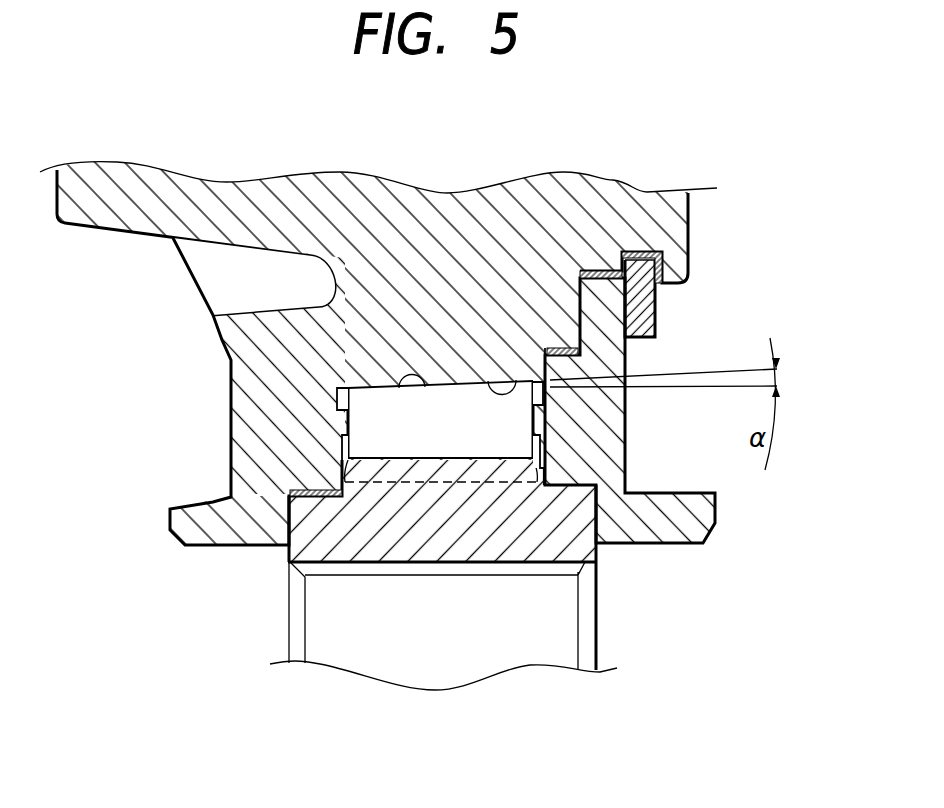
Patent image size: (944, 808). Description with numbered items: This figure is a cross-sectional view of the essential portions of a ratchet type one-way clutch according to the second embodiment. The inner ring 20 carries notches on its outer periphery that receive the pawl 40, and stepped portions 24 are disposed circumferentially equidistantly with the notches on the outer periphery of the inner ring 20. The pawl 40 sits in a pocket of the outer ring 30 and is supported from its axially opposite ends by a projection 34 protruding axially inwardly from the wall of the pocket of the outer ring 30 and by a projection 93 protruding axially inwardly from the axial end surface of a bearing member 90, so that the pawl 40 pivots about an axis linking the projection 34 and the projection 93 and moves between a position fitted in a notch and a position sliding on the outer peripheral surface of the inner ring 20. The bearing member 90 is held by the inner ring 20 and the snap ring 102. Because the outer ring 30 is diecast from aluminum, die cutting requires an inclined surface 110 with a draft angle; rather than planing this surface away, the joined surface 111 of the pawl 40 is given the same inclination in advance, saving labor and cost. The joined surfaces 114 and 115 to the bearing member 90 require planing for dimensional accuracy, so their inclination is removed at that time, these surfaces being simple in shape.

The inner ring 20 is at (572, 550).
The stepped portions 24 is at (450, 470).
The outer ring 30 is at (428, 330).
The projection 34 is at (350, 423).
The pawl 40 is at (385, 407).
The bearing member 90 is at (608, 357).
The projection 93 is at (532, 417).
The snap ring 102 is at (643, 305).
The inclined surface 110 is at (488, 379).
The joined surface 111 is at (425, 387).
The joined surface 114 is at (303, 496).
The joined surface 115 is at (628, 252).